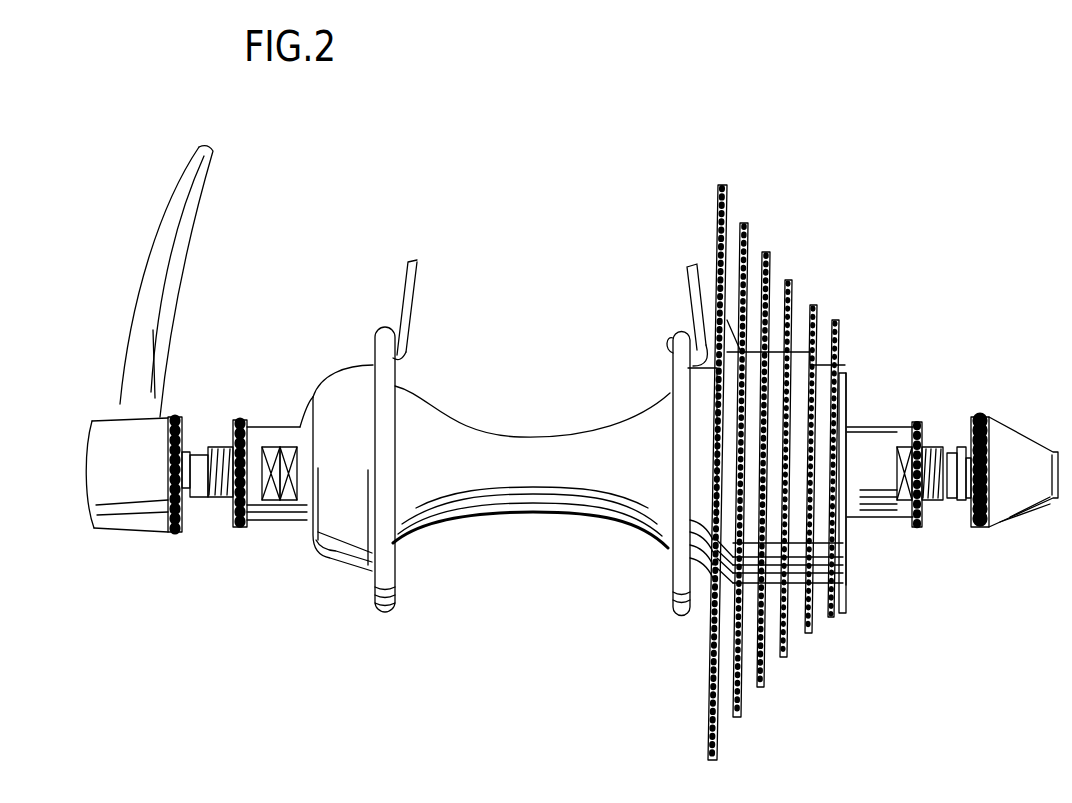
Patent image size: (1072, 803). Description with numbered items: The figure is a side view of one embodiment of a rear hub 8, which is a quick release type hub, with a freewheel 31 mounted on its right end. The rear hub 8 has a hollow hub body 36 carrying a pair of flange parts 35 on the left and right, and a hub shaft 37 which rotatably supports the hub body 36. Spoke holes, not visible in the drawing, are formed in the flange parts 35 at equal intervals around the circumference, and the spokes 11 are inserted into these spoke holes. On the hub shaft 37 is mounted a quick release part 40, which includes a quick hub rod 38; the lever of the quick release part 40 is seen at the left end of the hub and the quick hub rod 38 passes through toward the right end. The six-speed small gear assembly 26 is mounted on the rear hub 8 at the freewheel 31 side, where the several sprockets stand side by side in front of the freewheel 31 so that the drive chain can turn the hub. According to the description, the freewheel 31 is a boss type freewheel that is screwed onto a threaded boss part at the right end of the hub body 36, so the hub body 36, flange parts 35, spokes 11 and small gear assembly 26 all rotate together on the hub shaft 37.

The rear hub 8 is at (560, 300).
The spokes 11 is at (416, 292).
The small gear assembly 26 is at (723, 186).
The freewheel 31 is at (822, 283).
The flange parts 35 is at (386, 336).
The hub body 36 is at (480, 440).
The hub shaft 37 is at (870, 452).
The quick hub rod 38 is at (956, 452).
The quick release part 40 is at (172, 386).